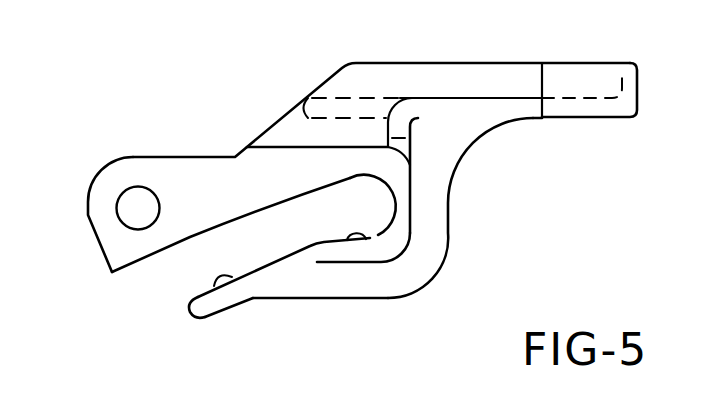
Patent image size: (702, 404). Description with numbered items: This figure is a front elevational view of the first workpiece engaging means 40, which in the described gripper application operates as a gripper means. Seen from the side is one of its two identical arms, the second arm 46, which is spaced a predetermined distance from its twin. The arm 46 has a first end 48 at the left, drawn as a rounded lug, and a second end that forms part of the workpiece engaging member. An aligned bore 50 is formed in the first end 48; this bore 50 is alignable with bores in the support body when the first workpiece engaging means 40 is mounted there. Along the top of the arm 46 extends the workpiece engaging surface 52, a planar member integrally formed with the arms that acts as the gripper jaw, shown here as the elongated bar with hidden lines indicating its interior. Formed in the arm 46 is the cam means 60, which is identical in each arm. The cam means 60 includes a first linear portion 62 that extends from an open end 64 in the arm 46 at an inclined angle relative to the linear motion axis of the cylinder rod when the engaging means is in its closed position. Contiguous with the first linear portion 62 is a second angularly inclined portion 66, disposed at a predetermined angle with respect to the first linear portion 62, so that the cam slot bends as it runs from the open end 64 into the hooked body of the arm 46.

The first workpiece engaging means 40 is at (526, 33).
The second arm 46 is at (203, 177).
The first end 48 is at (90, 198).
The bore 50 is at (128, 226).
The workpiece engaging surface 52 is at (608, 116).
The cam means 60 is at (366, 217).
The first linear portion 62 is at (220, 286).
The open end 64 is at (197, 303).
The second angularly inclined portion 66 is at (369, 238).